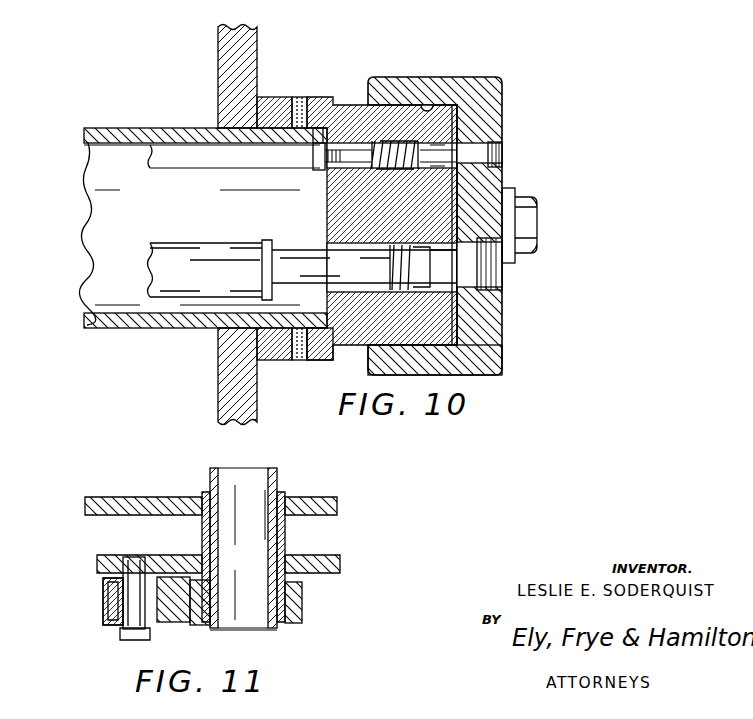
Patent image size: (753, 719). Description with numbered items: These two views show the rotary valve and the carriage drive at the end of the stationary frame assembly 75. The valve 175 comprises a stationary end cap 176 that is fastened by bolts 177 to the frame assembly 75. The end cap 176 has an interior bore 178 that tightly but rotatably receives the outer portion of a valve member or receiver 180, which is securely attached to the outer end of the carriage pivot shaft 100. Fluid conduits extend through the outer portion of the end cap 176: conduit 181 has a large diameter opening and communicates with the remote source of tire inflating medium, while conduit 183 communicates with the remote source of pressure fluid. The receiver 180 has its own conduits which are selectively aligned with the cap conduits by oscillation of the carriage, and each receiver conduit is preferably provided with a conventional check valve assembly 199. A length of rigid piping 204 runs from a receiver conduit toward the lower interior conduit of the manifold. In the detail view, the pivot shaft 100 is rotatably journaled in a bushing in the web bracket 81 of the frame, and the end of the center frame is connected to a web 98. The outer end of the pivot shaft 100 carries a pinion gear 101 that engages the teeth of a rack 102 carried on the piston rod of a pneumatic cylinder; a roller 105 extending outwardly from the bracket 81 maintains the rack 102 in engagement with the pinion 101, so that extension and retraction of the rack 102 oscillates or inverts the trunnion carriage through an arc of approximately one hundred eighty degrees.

In FIG. 10, the frame assembly 75 is at (250, 60).
In FIG. 10, the pivot shaft 100 is at (140, 130).
In FIG. 11, the pivot shaft 100 is at (278, 478).
In FIG. 10, the interior bore 178 is at (430, 105).
In FIG. 10, the check valve assembly 199 is at (458, 125).
In FIG. 10, the valve member or receiver 180 is at (357, 348).
In FIG. 10, the rigid piping 204 is at (199, 258).
In FIG. 10, the valve 175 is at (430, 76).
In FIG. 10, the end cap 176 is at (503, 370).
In FIG. 10, the conduit 183 is at (502, 160).
In FIG. 10, the conduit 181 is at (502, 285).
In FIG. 10, the bolts 177 is at (535, 217).
In FIG. 11, the web 98 is at (337, 506).
In FIG. 11, the web bracket 81 is at (340, 566).
In FIG. 11, the pinion gear 101 is at (300, 596).
In FIG. 11, the rack 102 is at (180, 624).
In FIG. 11, the roller 105 is at (103, 606).